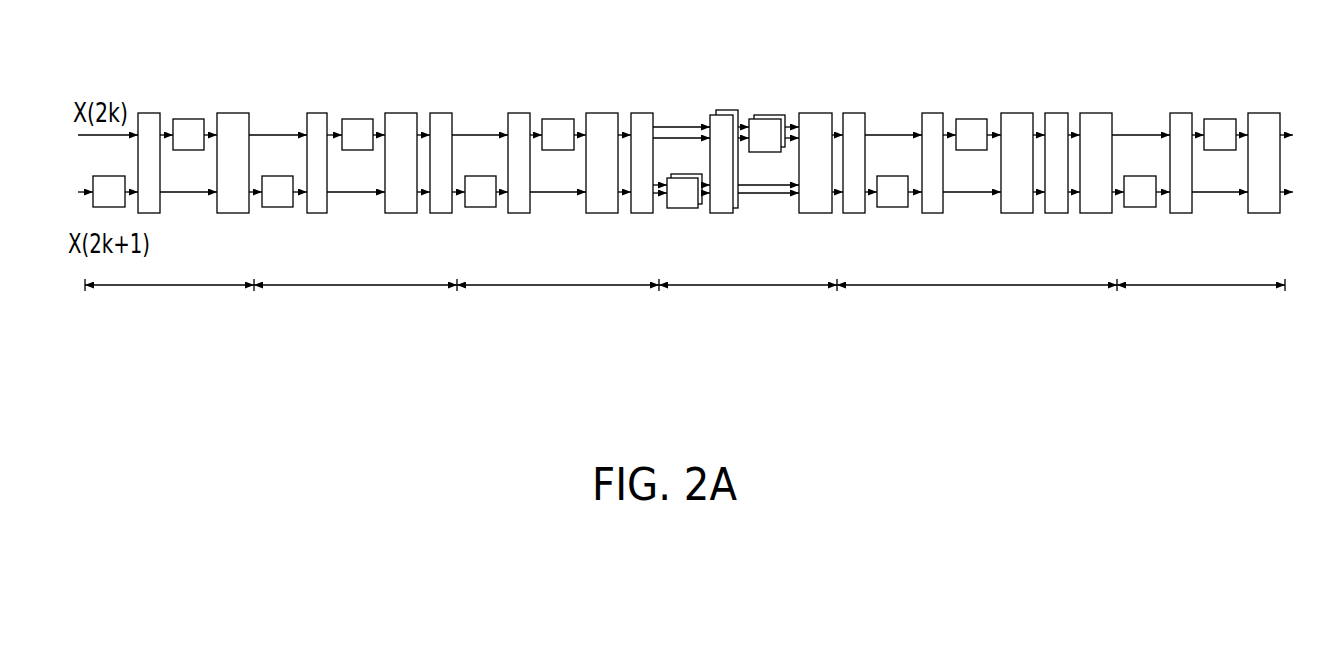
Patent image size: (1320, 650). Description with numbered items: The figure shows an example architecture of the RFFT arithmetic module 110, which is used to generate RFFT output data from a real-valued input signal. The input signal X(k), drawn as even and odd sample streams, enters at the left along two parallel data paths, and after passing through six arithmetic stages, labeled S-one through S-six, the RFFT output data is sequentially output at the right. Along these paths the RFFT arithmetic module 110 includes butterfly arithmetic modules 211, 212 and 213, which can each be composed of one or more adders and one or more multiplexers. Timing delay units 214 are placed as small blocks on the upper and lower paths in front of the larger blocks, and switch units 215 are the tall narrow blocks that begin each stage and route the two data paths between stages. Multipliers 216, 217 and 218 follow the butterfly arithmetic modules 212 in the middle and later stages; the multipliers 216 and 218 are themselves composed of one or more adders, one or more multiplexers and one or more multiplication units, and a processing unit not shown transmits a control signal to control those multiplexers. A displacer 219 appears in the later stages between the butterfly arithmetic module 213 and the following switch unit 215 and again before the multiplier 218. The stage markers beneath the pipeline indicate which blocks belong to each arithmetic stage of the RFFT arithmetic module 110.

The RFFT arithmetic module 110 is at (1285, 422).
The butterfly arithmetic module 211 is at (232, 112).
The butterfly arithmetic module 212 is at (402, 112).
The butterfly arithmetic module 213 is at (815, 112).
The timing delay unit 214 is at (108, 175).
The switch unit 215 is at (150, 112).
The multiplier 216 is at (441, 112).
The multiplier 217 is at (642, 112).
The multiplier 218 is at (1096, 112).
The displacer 219 is at (854, 112).